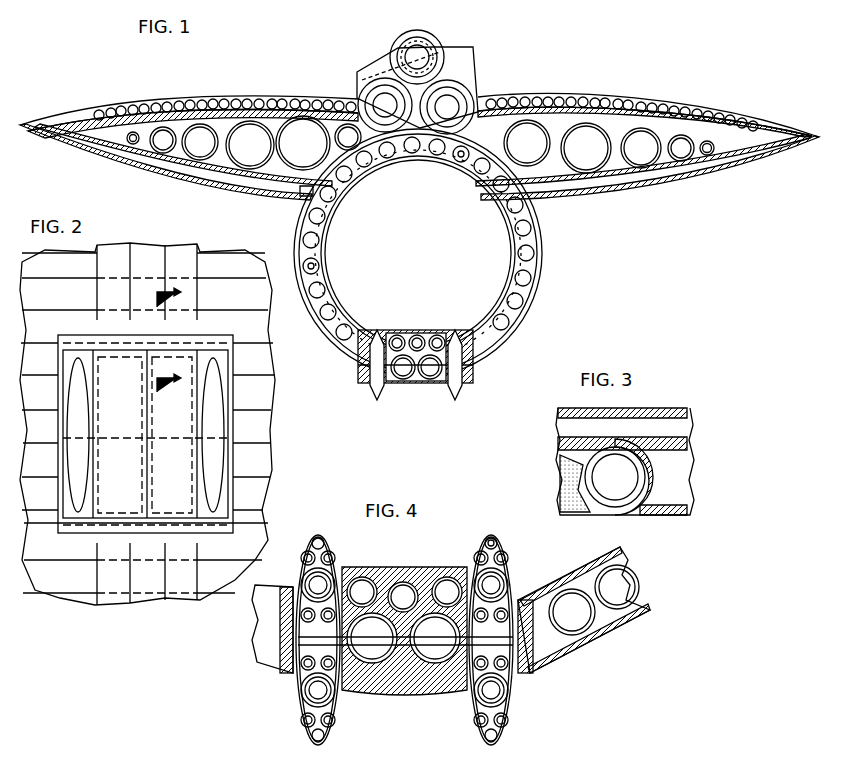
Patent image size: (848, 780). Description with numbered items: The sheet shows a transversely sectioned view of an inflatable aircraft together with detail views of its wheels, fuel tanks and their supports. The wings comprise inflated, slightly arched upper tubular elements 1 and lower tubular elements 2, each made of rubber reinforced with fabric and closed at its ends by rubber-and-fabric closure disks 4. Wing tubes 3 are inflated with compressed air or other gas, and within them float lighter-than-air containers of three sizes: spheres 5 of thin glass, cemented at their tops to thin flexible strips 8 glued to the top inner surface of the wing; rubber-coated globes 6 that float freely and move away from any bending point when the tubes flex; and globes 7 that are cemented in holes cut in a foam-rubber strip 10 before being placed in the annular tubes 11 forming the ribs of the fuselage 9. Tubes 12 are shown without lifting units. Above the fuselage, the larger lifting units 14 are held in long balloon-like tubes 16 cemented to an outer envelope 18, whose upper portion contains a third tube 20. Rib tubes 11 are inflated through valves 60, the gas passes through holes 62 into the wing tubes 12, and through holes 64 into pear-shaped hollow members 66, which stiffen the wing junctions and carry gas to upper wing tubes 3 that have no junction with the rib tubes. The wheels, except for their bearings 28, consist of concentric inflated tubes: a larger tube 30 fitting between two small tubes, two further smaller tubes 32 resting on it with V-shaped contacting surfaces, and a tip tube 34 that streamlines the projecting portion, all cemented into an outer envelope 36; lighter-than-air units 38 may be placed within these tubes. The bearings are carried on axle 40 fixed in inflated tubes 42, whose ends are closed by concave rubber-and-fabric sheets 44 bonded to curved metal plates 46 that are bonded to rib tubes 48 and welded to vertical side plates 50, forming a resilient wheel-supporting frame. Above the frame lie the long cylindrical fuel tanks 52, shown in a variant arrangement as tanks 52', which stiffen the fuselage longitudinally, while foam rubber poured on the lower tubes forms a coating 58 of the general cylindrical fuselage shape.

In FIG. 1, the upper tubular element 1 is at (600, 86).
In FIG. 1, the lower tubular element 2 is at (655, 201).
In FIG. 1, the wing tube 3 is at (715, 110).
In FIG. 2, the wing tube 3 is at (174, 339).
In FIG. 1, the closure disk 4 is at (70, 108).
In FIG. 1, the sphere 5 is at (532, 148).
In FIG. 1, the globe 6 is at (262, 100).
In FIG. 1, the globe 7 is at (318, 310).
In FIG. 1, the flexible strip 8 is at (283, 142).
In FIG. 1, the fuselage 9 is at (442, 271).
In FIG. 1, the foam-rubber strip 10 is at (303, 245).
In FIG. 1, the annular tube 11 is at (540, 283).
In FIG. 1, the tube 12 is at (120, 170).
In FIG. 1, the lifting unit 14 is at (455, 114).
In FIG. 1, the inflated tube 16 is at (360, 88).
In FIG. 1, the outer envelope 18 is at (462, 50).
In FIG. 1, the balloon-like tube 20 is at (405, 35).
In FIG. 4, the bearing 28 is at (357, 645).
In FIG. 4, the larger tube 30 is at (340, 690).
In FIG. 4, the smaller tube 32 is at (505, 560).
In FIG. 4, the tube 34 is at (500, 540).
In FIG. 4, the outer envelope 36 is at (470, 550).
In FIG. 4, the lighter-than-air unit 38 is at (497, 585).
In FIG. 2, the axle 40 is at (178, 437).
In FIG. 4, the axle 40 is at (450, 640).
In FIG. 2, the inflated tube 42 is at (180, 482).
In FIG. 4, the inflated tube 42 is at (356, 632).
In FIG. 3, the concave rubber-and-fabric sheet 44 is at (655, 472).
In FIG. 2, the metal plate 46 is at (95, 335).
In FIG. 3, the metal plate 46 is at (628, 507).
In FIG. 4, the metal plate 46 is at (283, 590).
In FIG. 2, the rib tube 48 is at (50, 334).
In FIG. 3, the rib tube 48 is at (612, 510).
In FIG. 2, the vertical side plate 50 is at (58, 363).
In FIG. 4, the vertical side plate 50 is at (525, 675).
In FIG. 1, the fuel tank 52 is at (415, 356).
In FIG. 4, the fuel tank 52 is at (404, 594).
In FIG. 2, the fuel tank 52' is at (147, 424).
In FIG. 3, the fuel tank 52' is at (641, 450).
In FIG. 4, the coating 58 is at (413, 690).
In FIG. 1, the valve 60 is at (313, 283).
In FIG. 1, the hole 62 is at (300, 192).
In FIG. 1, the hole 64 is at (465, 170).
In FIG. 1, the hollow member 66 is at (348, 137).